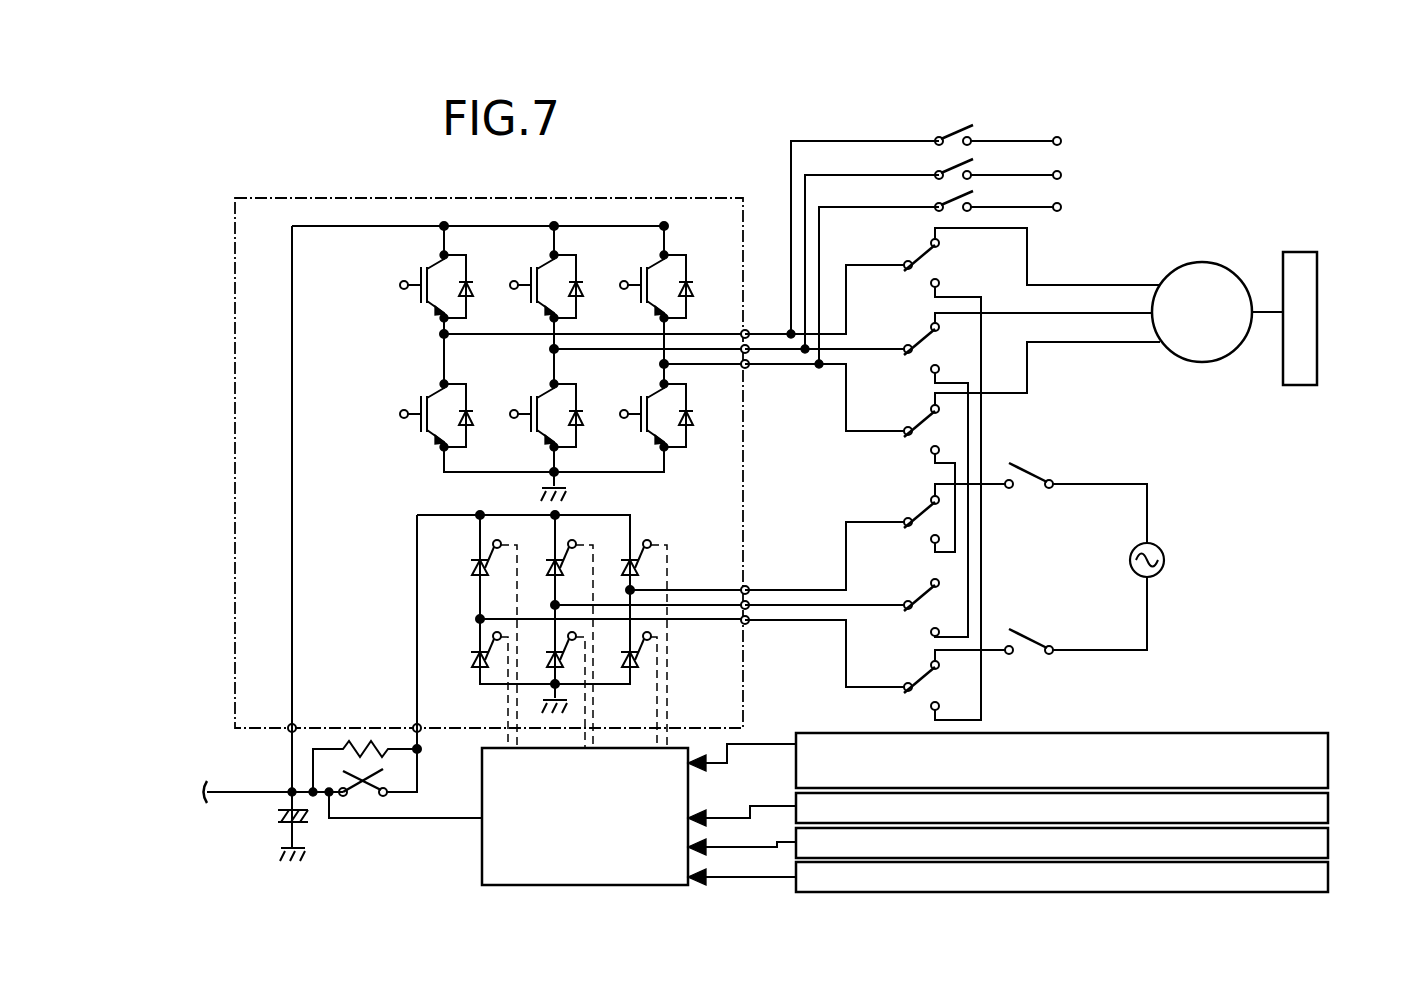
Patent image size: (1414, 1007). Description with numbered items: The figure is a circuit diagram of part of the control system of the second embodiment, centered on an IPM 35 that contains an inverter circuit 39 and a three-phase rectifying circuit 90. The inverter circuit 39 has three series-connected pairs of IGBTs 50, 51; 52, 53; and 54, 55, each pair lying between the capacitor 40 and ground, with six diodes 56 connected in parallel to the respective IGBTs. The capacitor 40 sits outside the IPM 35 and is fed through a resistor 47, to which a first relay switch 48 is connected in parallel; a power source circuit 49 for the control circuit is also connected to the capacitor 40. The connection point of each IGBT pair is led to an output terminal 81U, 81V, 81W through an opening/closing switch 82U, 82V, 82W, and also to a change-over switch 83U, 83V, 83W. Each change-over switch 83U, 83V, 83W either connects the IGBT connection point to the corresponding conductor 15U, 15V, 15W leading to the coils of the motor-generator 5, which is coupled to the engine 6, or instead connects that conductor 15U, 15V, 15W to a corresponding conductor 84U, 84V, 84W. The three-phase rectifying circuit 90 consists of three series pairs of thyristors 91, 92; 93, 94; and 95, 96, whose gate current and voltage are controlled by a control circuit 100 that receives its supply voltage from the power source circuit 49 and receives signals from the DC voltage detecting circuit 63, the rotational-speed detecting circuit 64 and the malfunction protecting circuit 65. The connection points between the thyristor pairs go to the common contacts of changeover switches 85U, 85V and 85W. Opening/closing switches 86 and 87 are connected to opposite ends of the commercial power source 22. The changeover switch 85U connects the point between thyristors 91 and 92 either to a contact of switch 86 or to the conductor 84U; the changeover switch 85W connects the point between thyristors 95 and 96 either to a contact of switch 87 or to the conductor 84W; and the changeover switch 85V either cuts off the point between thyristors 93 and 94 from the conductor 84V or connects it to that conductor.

The motor-generator 5 is at (1212, 263).
The engine 6 is at (1303, 252).
The conductor 15U is at (1027, 250).
The conductor 15V is at (1092, 312).
The conductor 15W is at (1027, 365).
The commercial power source 22 is at (1158, 549).
The IPM 35 is at (745, 645).
The inverter circuit 39 is at (672, 236).
The capacitor 40 is at (278, 824).
The resistor 47 is at (365, 745).
The first relay switch 48 is at (376, 777).
The power source circuit for the control circuit 49 is at (1330, 745).
The IGBT 50 is at (432, 290).
The IGBT 51 is at (432, 422).
The IGBT 52 is at (540, 285).
The IGBT 53 is at (540, 418).
The IGBT 54 is at (650, 285).
The IGBT 55 is at (650, 418).
The diode 56 is at (470, 285).
The DC voltage detecting circuit 63 is at (1330, 810).
The rotational-speed detecting circuit 64 is at (1330, 843).
The malfunction protecting circuit 65 is at (1330, 876).
The output terminal 81U is at (1062, 143).
The output terminal 81V is at (1062, 177).
The output terminal 81W is at (1062, 209).
The opening/closing switch 82U is at (948, 133).
The opening/closing switch 82V is at (948, 167).
The opening/closing switch 82W is at (948, 199).
The change-over switch 83U is at (928, 252).
The change-over switch 83V is at (926, 337).
The change-over switch 83W is at (926, 420).
The conductor 84U is at (983, 680).
The conductor 84V is at (970, 587).
The conductor 84W is at (957, 508).
The changeover switch 85U is at (926, 677).
The changeover switch 85V is at (926, 595).
The changeover switch 85W is at (925, 510).
The opening/closing switch 86 is at (1032, 643).
The opening/closing switch 87 is at (1028, 474).
The three-phase rectifying circuit 90 is at (653, 524).
The thyristor 91 is at (473, 572).
The thyristor 92 is at (473, 658).
The thyristor 93 is at (548, 568).
The thyristor 94 is at (548, 661).
The thyristor 95 is at (652, 566).
The thyristor 96 is at (652, 660).
The control circuit 100 is at (480, 846).